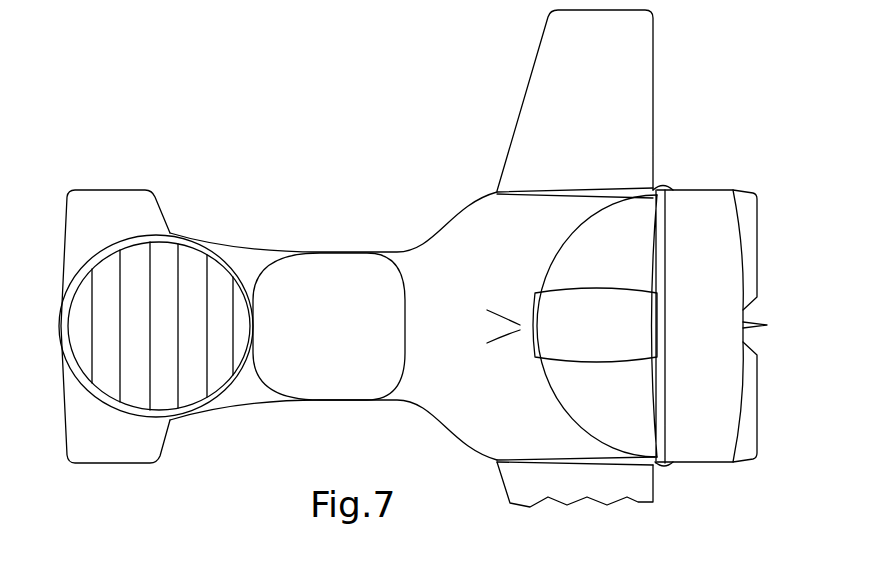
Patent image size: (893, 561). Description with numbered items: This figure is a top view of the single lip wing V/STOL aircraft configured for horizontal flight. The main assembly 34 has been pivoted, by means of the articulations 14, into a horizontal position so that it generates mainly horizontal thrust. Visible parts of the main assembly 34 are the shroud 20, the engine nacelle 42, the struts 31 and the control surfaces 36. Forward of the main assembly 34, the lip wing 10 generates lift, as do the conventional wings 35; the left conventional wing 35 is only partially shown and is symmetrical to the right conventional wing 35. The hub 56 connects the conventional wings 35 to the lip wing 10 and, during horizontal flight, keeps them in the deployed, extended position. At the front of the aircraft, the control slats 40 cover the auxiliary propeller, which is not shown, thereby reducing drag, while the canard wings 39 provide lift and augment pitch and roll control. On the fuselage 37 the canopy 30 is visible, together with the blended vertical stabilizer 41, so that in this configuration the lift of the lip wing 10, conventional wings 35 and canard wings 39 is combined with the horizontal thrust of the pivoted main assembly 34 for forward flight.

The lip wing 10 is at (462, 218).
The articulations 14 is at (660, 183).
The shroud 20 is at (703, 452).
The canopy 30 is at (355, 387).
The struts 31 is at (660, 325).
The main assembly 34 is at (703, 114).
The conventional wings 35 is at (538, 93).
The control surfaces 36 is at (748, 200).
The fuselage 37 is at (338, 228).
The canard wings 39 is at (150, 223).
The control slats 40 is at (220, 258).
The blended vertical stabilizer 41 is at (520, 323).
The engine nacelle 42 is at (572, 295).
The hub 56 is at (587, 192).